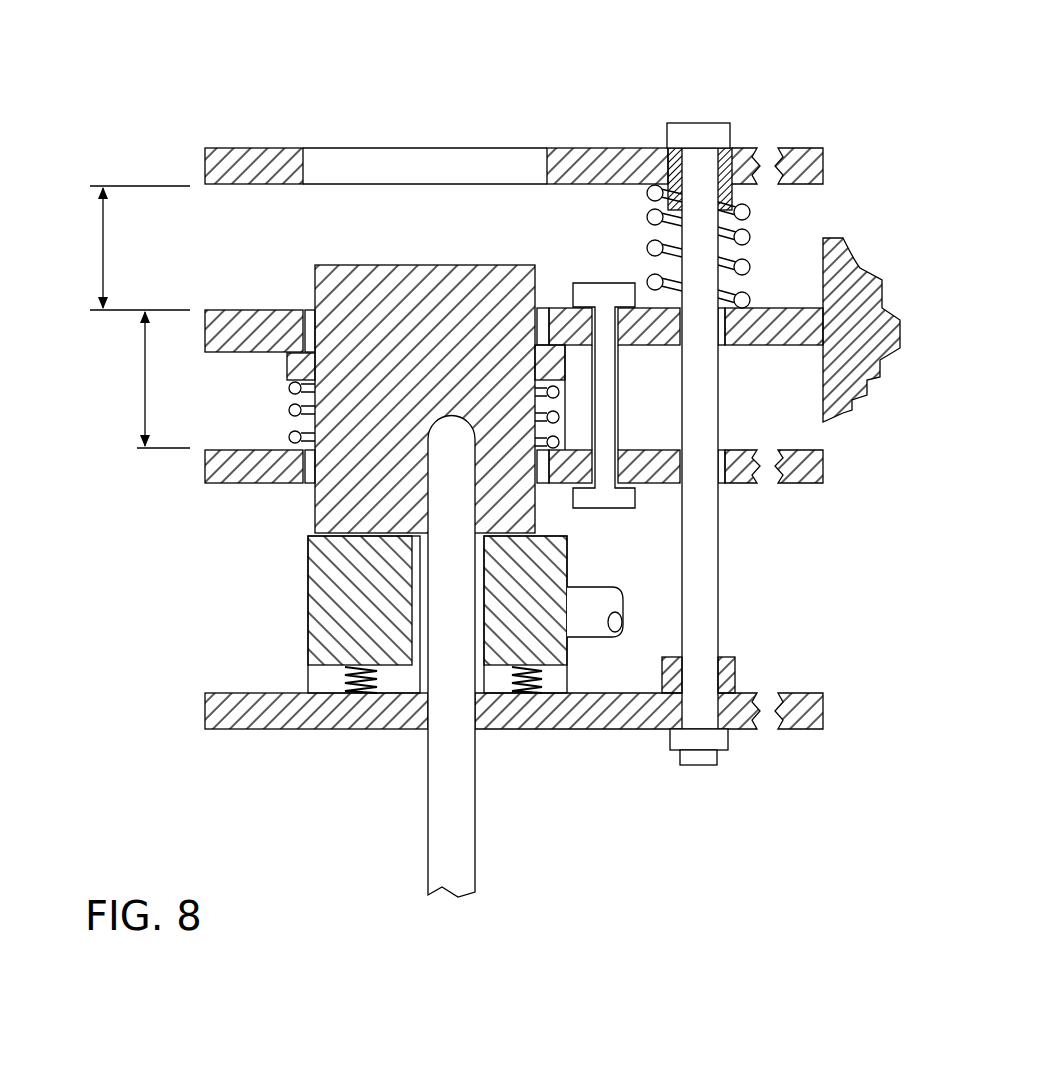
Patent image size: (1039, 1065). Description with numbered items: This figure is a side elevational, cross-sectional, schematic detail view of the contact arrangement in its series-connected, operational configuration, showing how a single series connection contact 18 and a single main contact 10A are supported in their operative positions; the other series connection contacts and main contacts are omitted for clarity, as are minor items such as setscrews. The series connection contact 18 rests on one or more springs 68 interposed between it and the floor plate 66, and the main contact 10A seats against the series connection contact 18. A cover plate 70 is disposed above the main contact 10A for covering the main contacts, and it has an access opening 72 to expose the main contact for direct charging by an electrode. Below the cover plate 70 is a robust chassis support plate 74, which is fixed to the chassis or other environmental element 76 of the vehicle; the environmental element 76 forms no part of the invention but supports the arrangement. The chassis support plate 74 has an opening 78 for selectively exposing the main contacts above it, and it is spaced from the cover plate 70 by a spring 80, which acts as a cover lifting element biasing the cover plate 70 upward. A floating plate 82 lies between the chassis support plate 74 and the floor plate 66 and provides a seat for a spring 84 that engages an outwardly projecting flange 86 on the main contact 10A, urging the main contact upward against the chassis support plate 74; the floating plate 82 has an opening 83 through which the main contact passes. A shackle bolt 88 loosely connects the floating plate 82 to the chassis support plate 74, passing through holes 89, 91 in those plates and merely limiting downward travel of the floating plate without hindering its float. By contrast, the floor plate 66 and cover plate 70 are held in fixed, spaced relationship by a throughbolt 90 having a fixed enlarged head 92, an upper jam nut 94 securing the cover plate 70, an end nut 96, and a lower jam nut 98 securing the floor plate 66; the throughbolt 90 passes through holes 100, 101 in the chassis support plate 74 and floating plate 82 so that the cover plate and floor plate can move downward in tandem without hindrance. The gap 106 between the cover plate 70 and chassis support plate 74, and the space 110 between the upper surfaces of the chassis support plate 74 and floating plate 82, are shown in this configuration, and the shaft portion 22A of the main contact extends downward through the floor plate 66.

The main contact 10A is at (458, 359).
The series connection contact 18 is at (306, 610).
The shaft 22A is at (428, 848).
The floor plate 66 is at (228, 730).
The springs 68 is at (345, 683).
The cover plate 70 is at (222, 148).
The access opening 72 is at (305, 170).
The chassis support plate 74 is at (237, 352).
The environmental element 76 is at (878, 224).
The opening 78 is at (311, 322).
The spring 80 is at (741, 256).
The floating plate 82 is at (234, 485).
The opening 83 is at (312, 486).
The spring 84 is at (284, 420).
The outwardly projecting flange 86 is at (553, 338).
The shackle bolt 88 is at (617, 370).
The hole 89 is at (585, 350).
The throughbolt 90 is at (718, 552).
The hole 91 is at (632, 439).
The fixed enlarged head 92 is at (702, 132).
The upper jam nut 94 is at (766, 198).
The end nut 96 is at (730, 740).
The lower jam nut 98 is at (738, 677).
The hole 100 is at (728, 349).
The hole 101 is at (729, 490).
The gap 106 is at (103, 262).
The space 110 is at (145, 373).